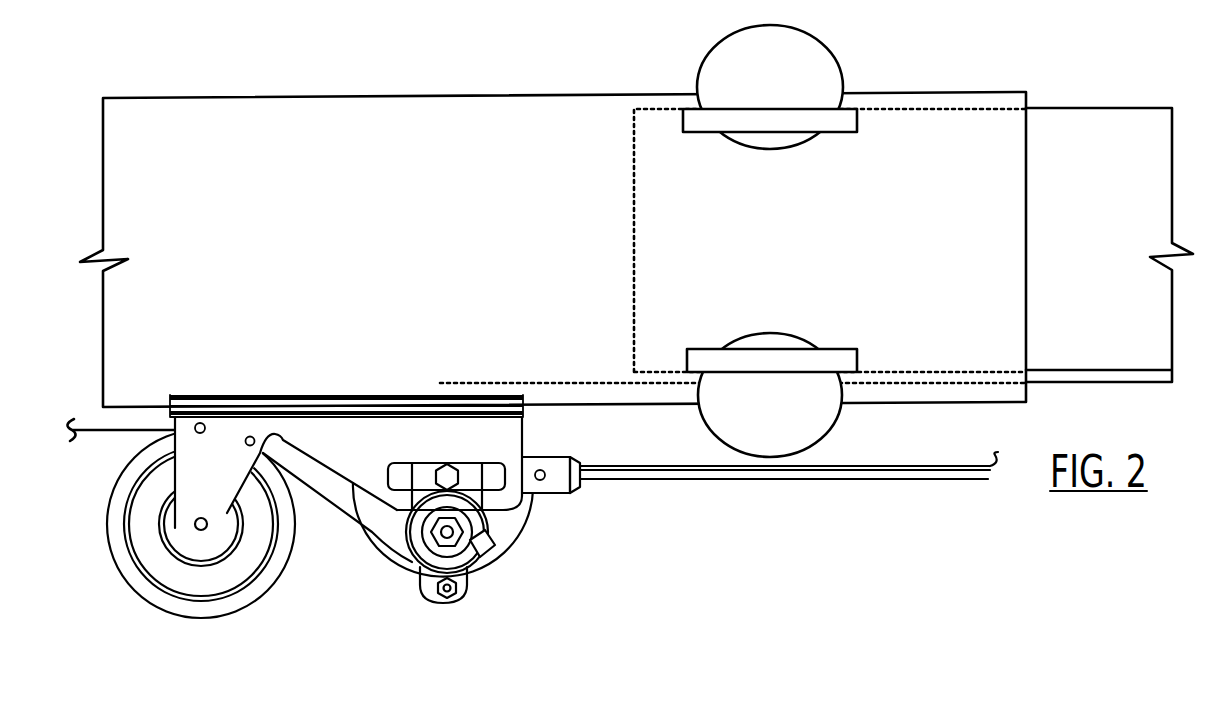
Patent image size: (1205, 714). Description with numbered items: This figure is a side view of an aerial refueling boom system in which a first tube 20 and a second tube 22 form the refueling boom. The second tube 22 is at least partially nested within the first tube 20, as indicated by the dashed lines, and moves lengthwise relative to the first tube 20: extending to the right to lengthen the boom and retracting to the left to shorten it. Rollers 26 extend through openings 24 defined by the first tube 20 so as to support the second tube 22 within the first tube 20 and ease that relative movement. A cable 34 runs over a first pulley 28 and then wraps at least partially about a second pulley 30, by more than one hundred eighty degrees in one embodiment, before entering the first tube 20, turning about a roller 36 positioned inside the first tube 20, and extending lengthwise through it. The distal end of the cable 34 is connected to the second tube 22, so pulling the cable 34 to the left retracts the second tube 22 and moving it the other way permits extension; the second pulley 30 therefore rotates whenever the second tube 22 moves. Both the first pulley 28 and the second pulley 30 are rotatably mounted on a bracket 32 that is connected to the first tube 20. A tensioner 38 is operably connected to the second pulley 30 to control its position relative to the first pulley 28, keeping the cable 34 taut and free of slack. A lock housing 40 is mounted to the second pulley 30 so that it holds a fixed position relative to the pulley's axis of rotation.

The first tube 20 is at (468, 112).
The second tube 22 is at (1088, 115).
The openings 24 is at (848, 122).
The rollers 26 is at (817, 62).
The first pulley 28 is at (272, 568).
The second pulley 30 is at (517, 522).
The bracket 32 is at (510, 442).
The cable 34 is at (93, 433).
The roller 36 is at (443, 388).
The tensioner 38 is at (757, 481).
The housing 40 is at (473, 545).